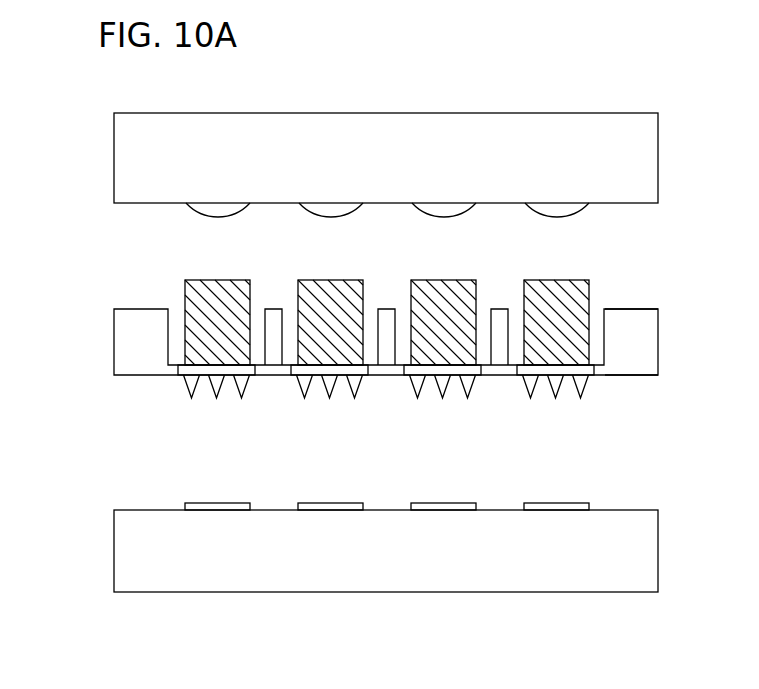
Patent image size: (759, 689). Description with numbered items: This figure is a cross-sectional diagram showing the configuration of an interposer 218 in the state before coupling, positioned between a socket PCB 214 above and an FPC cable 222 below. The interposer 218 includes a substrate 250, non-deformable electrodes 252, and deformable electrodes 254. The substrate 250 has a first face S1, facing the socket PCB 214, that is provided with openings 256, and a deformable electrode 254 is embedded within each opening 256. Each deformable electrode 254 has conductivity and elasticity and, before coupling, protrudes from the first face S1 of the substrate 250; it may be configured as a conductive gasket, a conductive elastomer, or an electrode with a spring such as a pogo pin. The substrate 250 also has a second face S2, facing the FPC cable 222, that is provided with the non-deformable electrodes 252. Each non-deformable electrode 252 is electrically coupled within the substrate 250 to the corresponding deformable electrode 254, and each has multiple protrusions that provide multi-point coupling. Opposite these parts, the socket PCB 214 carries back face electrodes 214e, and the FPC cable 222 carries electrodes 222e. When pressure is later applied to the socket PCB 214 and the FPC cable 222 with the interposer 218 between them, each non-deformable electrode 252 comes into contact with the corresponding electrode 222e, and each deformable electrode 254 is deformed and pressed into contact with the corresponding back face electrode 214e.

The socket PCB 214 is at (425, 182).
The back face electrode 214e is at (192, 216).
The interposer 218 is at (424, 323).
The substrate 250 is at (643, 337).
The non-deformable electrode 252 is at (186, 380).
The deformable electrode 254 is at (192, 296).
The opening 256 is at (258, 300).
The first face S1 is at (631, 304).
The second face S2 is at (631, 379).
The FPC cable 222 is at (432, 533).
The electrode 222e is at (231, 504).